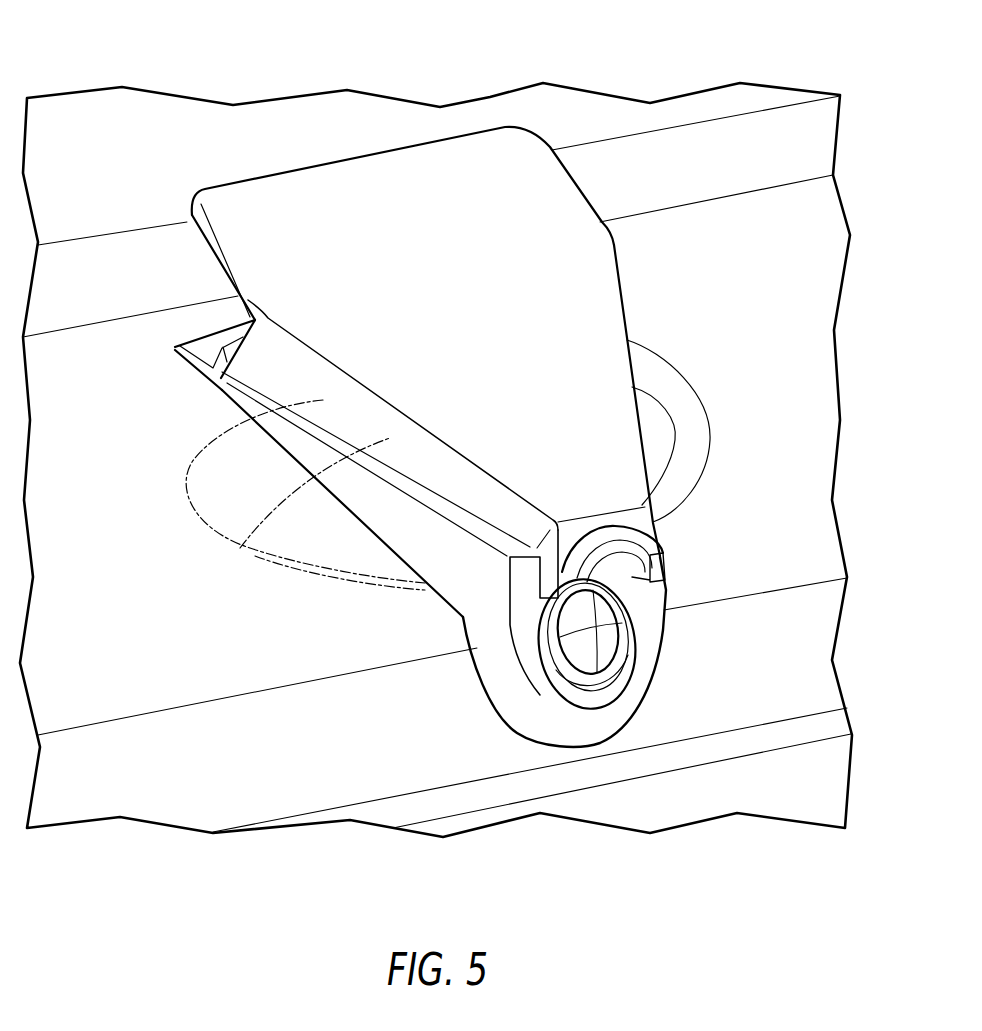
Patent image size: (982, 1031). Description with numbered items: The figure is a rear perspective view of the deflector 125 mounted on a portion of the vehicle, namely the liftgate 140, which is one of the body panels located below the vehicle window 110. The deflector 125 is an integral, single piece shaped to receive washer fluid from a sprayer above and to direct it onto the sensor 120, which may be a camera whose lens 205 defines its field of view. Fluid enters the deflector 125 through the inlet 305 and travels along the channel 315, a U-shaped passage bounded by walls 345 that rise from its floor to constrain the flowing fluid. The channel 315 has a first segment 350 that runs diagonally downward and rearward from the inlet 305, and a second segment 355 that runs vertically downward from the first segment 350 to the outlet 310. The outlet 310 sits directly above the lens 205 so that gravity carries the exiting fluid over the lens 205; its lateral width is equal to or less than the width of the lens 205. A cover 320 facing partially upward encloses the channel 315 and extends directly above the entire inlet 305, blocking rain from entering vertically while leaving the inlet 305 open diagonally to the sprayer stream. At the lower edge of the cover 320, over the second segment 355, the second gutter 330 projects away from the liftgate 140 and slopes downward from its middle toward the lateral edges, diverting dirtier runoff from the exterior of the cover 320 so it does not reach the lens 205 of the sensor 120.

The vehicle window 110 is at (157, 125).
The liftgate 140 is at (797, 372).
The deflector 125 is at (623, 273).
The cover 320 is at (573, 313).
The inlet 305 is at (253, 319).
The first segment 350 is at (483, 494).
The walls 345 is at (187, 472).
The channel 315 is at (243, 546).
The second segment 355 is at (548, 567).
The second gutter 330 is at (648, 522).
The sensor 120 is at (550, 660).
The lens 205 is at (607, 653).
The outlet 310 is at (640, 583).